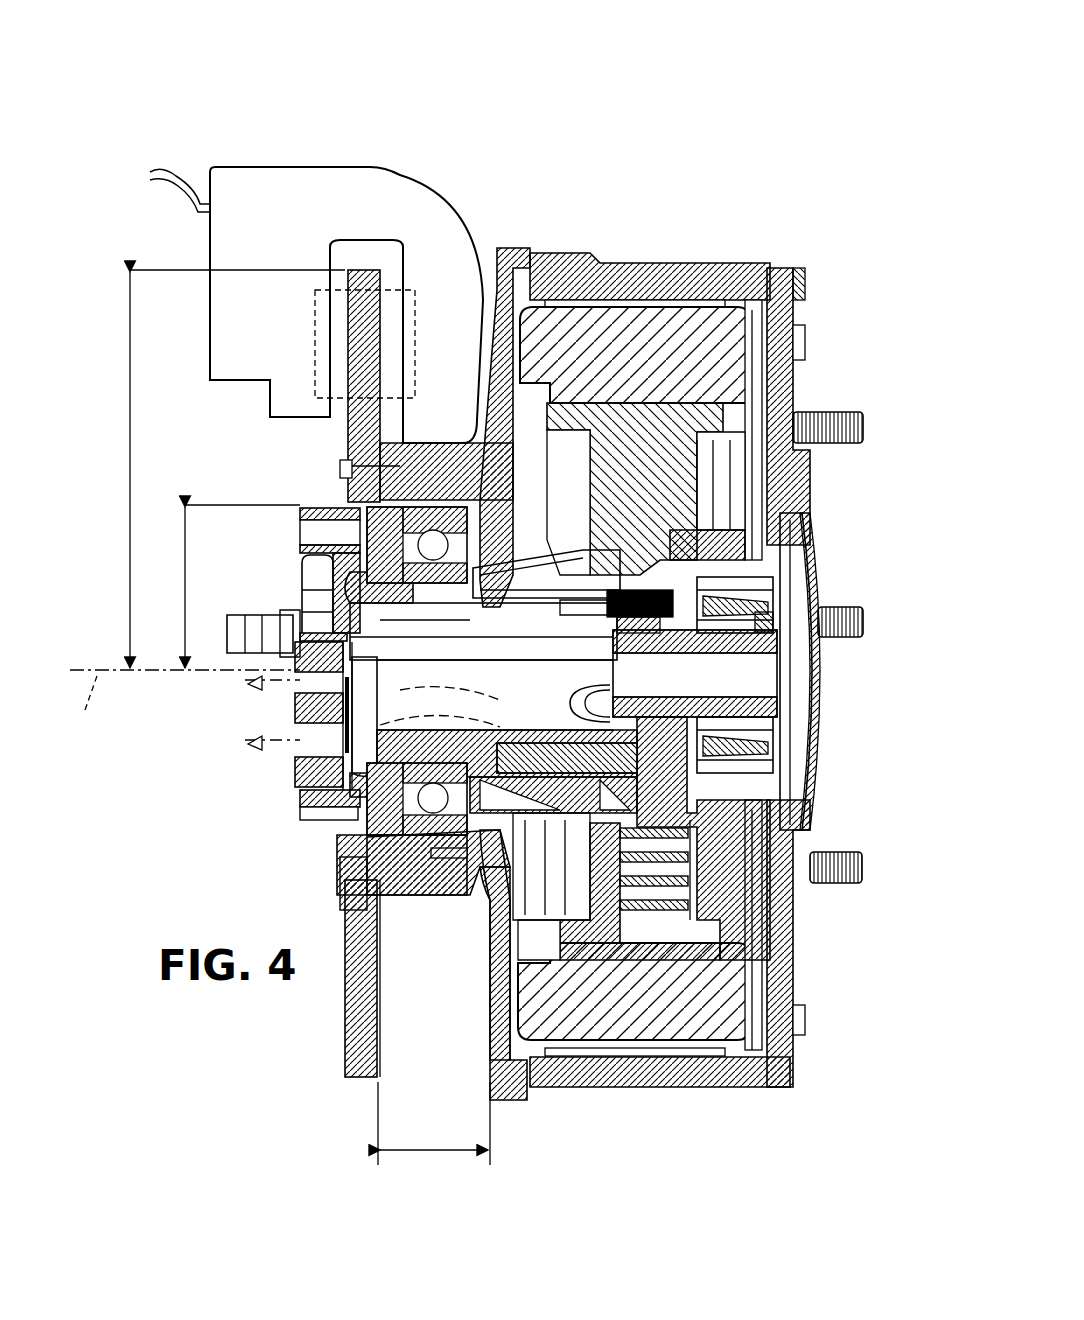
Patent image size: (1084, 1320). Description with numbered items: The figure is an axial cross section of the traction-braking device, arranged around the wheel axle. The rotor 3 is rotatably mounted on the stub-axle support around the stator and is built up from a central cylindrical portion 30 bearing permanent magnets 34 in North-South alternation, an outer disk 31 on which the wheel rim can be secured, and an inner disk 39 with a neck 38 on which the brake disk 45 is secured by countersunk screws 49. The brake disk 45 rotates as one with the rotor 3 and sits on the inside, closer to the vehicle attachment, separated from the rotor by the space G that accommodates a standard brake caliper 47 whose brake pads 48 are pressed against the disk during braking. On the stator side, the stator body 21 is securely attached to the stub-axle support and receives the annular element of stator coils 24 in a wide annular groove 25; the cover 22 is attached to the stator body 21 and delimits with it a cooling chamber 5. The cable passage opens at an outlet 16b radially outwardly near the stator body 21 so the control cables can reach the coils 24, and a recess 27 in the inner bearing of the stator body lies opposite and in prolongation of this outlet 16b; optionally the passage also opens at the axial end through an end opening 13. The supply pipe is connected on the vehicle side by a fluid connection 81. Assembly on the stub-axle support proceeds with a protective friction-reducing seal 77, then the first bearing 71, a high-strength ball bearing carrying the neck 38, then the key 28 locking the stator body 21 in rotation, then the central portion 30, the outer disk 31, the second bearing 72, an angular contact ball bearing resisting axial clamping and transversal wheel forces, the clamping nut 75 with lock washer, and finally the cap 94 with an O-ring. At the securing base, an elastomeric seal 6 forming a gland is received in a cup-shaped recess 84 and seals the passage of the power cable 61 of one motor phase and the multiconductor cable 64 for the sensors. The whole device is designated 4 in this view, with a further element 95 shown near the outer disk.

The brake device 4 is at (300, 140).
The rotor assembly 3 is at (622, 205).
The brake caliper 47 is at (432, 172).
The brake pads 48 is at (338, 303).
The brake disk 45 is at (360, 342).
The countersunk screws 49 is at (340, 468).
The inner disk 39 is at (497, 370).
The central cylindrical portion 30 is at (700, 272).
The permanent magnets 34 is at (660, 300).
The outer disk 31 is at (778, 387).
The bolt 95 is at (855, 428).
The annular element of stator coils 24 is at (617, 345).
The annular groove 25 is at (680, 400).
The cover 22 is at (700, 882).
The cooling chamber 5 is at (760, 948).
The stator body 21 is at (612, 855).
The second bearing 72 is at (735, 596).
The clamping nut 75 is at (770, 632).
The end opening 13 is at (780, 688).
The cap 94 is at (805, 720).
The recess 27 is at (528, 578).
The outlet 16b is at (510, 608).
The protective friction-reducing seal 77 is at (385, 823).
The first bearing 71 is at (458, 830).
The neck 38 is at (400, 905).
The key 28 is at (472, 883).
The seal 6 is at (300, 775).
The cup-shaped recess 84 is at (298, 812).
The fluid connection 81 is at (272, 622).
The multiconductor cable 64 is at (258, 683).
The power cable 61 is at (258, 743).